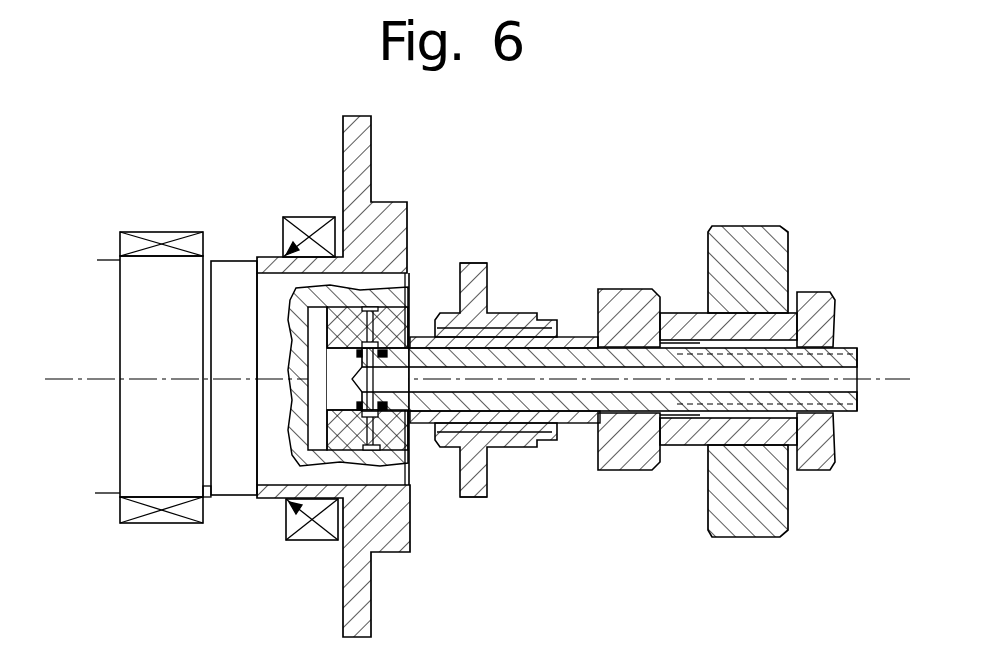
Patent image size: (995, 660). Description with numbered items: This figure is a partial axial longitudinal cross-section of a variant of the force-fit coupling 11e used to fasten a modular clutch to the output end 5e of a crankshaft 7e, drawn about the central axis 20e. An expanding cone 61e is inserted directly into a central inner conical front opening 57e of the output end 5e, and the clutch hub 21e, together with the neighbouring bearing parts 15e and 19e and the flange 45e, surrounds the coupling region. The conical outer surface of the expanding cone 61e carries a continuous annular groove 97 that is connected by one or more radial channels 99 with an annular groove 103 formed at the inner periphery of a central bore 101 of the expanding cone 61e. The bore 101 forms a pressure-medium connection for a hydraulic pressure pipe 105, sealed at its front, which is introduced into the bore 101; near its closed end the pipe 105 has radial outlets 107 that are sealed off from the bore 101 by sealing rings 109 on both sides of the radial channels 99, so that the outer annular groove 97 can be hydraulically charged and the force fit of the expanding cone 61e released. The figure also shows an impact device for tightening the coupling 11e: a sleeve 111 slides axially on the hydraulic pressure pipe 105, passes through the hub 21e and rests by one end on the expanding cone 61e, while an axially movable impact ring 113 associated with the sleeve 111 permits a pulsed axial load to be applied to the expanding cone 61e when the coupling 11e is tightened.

The output end 5e is at (348, 360).
The crankshaft 7e is at (138, 330).
The force-fit coupling 11e is at (442, 470).
The bearing 15e is at (312, 230).
The bearing 19e is at (160, 236).
The axis 20e is at (90, 385).
The hub of the clutch disc 21e is at (510, 322).
The housing flange 45e is at (352, 148).
The front opening 57e is at (398, 440).
The expanding cone 61e is at (335, 403).
The annular groove 97 is at (375, 447).
The radial channels 99 is at (410, 338).
The central bore 101 is at (343, 410).
The annular groove 103 is at (355, 422).
The hydraulic pressure pipe 105 is at (857, 403).
The radial outlets 107 is at (415, 445).
The sealing rings 109 is at (233, 270).
The sleeve 111 is at (577, 335).
The impact ring 113 is at (750, 232).